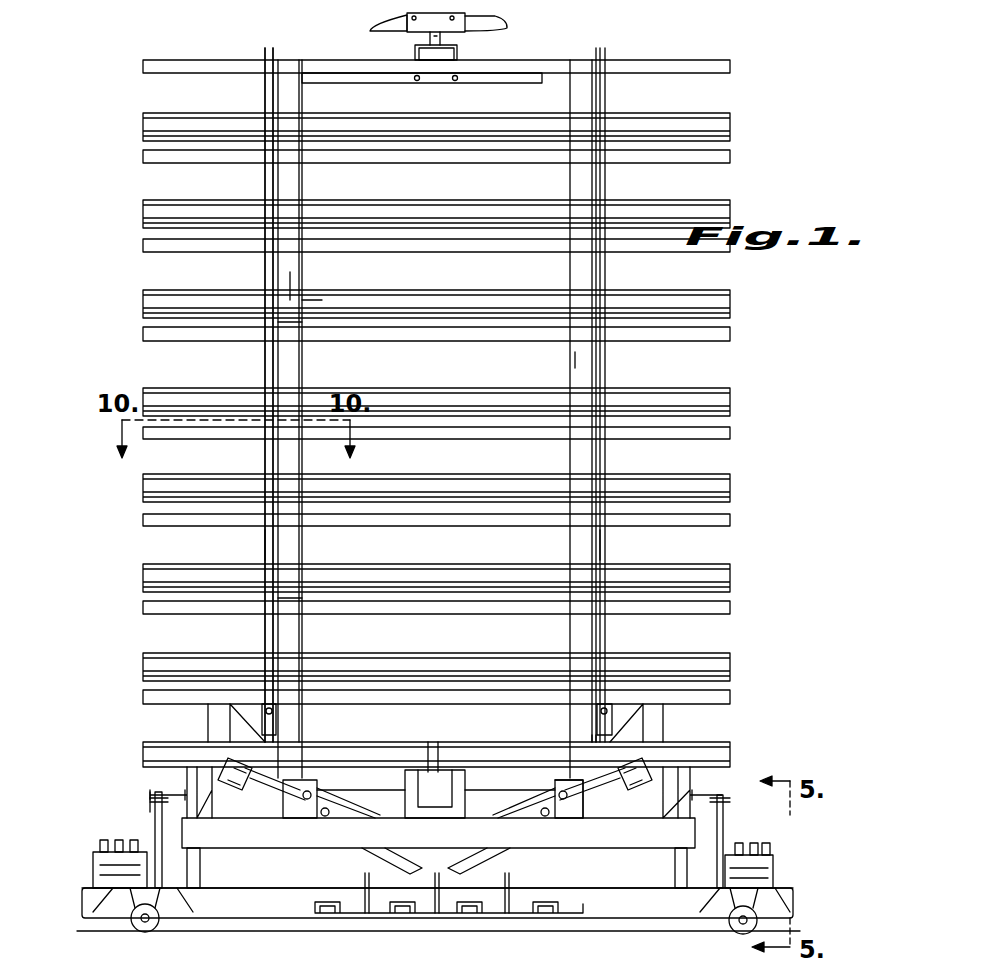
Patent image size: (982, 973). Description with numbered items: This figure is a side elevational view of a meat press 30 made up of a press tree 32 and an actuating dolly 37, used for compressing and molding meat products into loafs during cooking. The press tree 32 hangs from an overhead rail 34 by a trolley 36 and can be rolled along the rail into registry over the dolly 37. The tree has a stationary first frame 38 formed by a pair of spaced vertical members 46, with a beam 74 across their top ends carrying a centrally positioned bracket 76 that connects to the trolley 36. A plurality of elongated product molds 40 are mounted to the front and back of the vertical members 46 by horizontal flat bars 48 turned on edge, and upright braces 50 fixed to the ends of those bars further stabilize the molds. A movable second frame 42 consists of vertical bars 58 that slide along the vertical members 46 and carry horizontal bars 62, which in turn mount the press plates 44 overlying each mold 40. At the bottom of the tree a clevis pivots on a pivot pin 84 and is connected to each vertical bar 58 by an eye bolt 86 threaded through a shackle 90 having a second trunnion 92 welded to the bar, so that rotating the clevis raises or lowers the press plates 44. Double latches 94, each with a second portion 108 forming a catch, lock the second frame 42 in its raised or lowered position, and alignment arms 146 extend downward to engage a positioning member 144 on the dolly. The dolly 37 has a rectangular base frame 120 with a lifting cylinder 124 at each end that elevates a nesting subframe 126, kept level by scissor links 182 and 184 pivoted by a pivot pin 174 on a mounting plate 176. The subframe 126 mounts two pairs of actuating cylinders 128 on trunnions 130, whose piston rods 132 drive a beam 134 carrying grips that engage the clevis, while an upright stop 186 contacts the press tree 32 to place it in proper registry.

The meat press 30 is at (86, 253).
The press tree 32 is at (105, 320).
The overhead rail 34 is at (488, 20).
The trolley 36 is at (462, 33).
The actuating dolly 37 is at (90, 800).
The first frame 38 is at (290, 88).
The product molds 40 is at (732, 400).
The second frame 42 is at (262, 94).
The press plates 44 is at (733, 328).
The vertical members 46 is at (297, 280).
The flat bars 48 is at (300, 326).
The upright braces 50 is at (318, 302).
The vertical bars 58 is at (268, 545).
The horizontal bars 62 is at (285, 600).
The beam 74 is at (542, 84).
The bracket 76 is at (460, 52).
The pivot pin 84 is at (565, 782).
The eye bolt 86 is at (592, 735).
The shackle 90 is at (262, 722).
The second trunnion 92 is at (604, 704).
The double latches 94 is at (320, 785).
The latch second portion 108 is at (648, 820).
The base frame 120 is at (796, 905).
The lifting cylinders 124 is at (95, 863).
The subframe 126 is at (660, 840).
The actuating cylinders 128 is at (355, 815).
The trunnions 130 is at (325, 818).
The piston rods 132 is at (282, 820).
The beam 134 is at (245, 820).
The positioning member 144 is at (442, 820).
The alignment arms 146 is at (440, 765).
The pivot pin 174 is at (150, 800).
The mounting plate 176 is at (185, 795).
The scissor link 182 is at (185, 882).
The scissor link 184 is at (155, 820).
The upright stop 186 is at (653, 720).